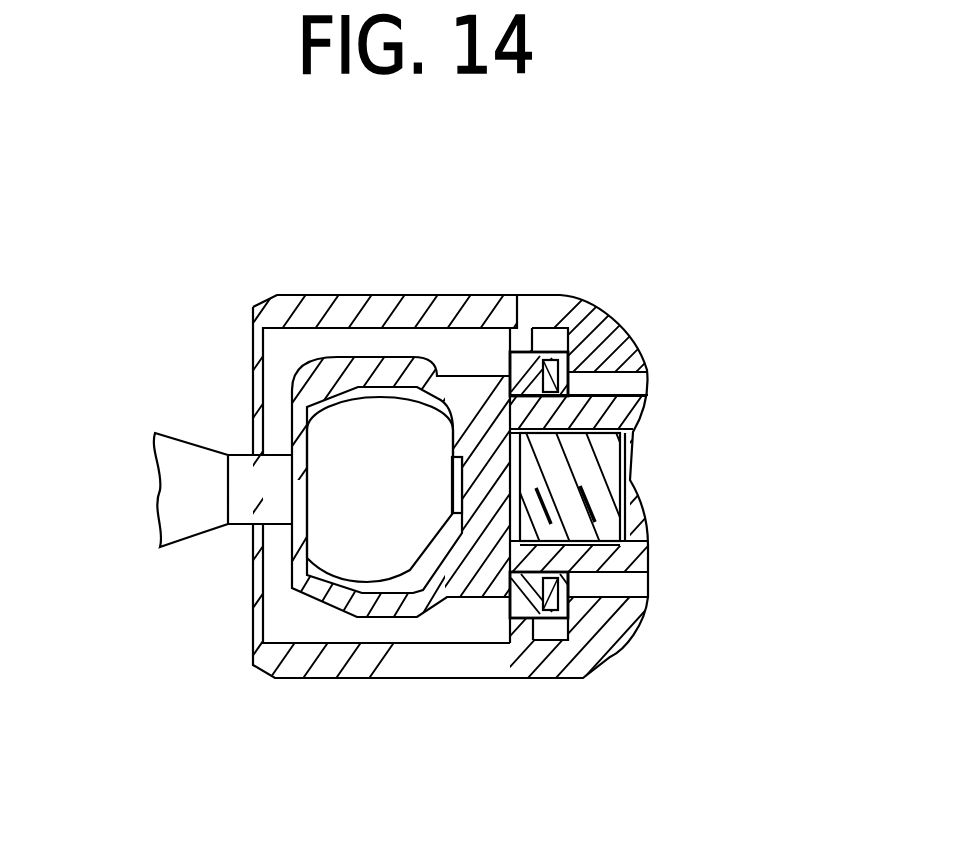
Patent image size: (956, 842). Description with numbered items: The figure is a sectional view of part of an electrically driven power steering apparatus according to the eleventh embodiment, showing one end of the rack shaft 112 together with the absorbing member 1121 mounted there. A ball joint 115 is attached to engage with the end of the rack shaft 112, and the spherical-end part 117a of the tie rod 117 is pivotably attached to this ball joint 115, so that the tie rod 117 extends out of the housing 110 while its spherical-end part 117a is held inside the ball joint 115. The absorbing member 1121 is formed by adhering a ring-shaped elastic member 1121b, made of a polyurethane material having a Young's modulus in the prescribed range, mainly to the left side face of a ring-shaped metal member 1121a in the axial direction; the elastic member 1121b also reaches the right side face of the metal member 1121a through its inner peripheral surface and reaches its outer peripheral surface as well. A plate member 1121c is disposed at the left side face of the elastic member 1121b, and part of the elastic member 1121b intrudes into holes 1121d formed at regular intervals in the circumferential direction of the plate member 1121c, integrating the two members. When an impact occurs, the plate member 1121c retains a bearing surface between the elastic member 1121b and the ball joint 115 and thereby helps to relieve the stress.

The housing 110 is at (308, 316).
The rack shaft 112 is at (627, 390).
The ball joint 115 is at (330, 385).
The tie rod 117 is at (178, 484).
The spherical-end part 117a is at (350, 537).
The absorbing member 1121 is at (566, 332).
The metal member 1121a is at (571, 372).
The elastic member 1121b is at (572, 395).
The plate member 1121c is at (515, 330).
The holes 1121d is at (513, 607).